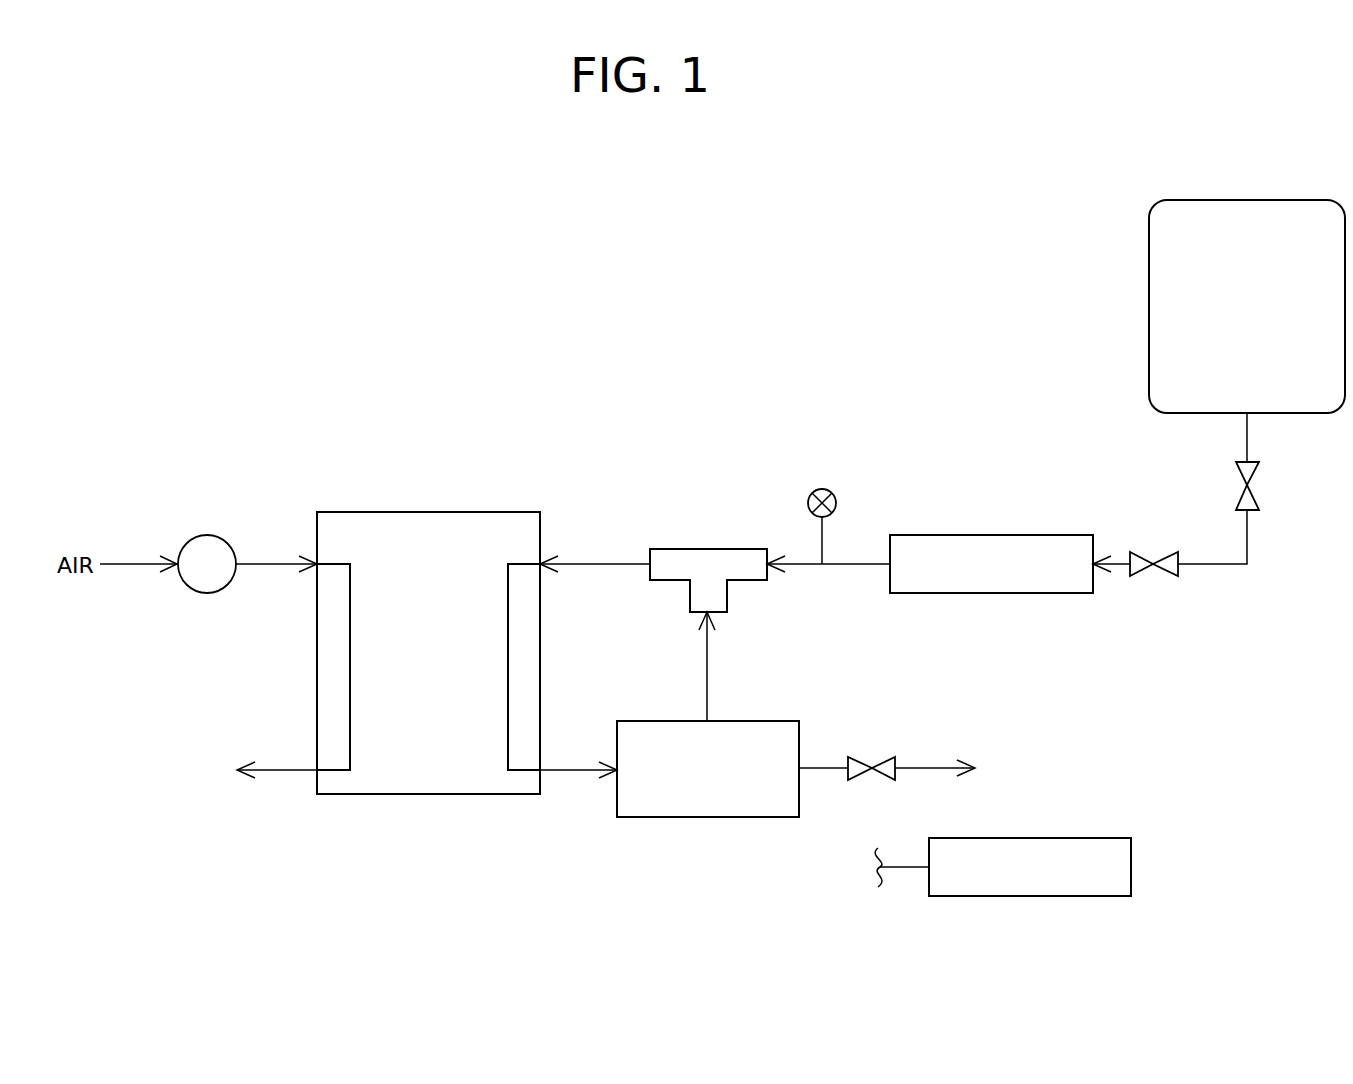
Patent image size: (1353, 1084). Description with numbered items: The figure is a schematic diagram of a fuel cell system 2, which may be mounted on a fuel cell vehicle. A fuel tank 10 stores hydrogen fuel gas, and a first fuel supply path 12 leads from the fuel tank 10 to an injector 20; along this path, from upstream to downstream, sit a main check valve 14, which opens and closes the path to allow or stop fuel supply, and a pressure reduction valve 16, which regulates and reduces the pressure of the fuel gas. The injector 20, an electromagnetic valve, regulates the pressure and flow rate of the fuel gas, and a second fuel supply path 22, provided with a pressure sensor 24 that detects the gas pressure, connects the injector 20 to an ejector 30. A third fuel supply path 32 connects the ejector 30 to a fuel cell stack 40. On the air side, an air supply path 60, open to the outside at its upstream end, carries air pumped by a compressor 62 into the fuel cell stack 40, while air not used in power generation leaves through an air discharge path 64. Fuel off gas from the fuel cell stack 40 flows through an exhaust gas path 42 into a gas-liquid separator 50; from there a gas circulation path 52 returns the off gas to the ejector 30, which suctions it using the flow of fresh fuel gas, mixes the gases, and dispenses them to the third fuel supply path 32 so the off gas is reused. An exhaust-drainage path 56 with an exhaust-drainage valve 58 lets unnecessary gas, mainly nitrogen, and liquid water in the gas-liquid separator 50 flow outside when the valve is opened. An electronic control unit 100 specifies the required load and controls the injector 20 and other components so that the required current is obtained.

The fuel cell system 2 is at (318, 396).
The fuel tank 10 is at (1148, 255).
The first fuel supply path 12 is at (1222, 566).
The main check valve 14 is at (1253, 492).
The pressure reduction valve 16 is at (1145, 578).
The injector 20 is at (1030, 535).
The second fuel supply path 22 is at (850, 565).
The pressure sensor 24 is at (822, 489).
The ejector 30 is at (727, 548).
The third fuel supply path 32 is at (582, 562).
The fuel cell stack 40 is at (435, 512).
The exhaust gas path 42 is at (572, 772).
The gas-liquid separator 50 is at (692, 818).
The gas circulation path 52 is at (708, 685).
The exhaust-drainage path 56 is at (815, 772).
The exhaust-drainage valve 58 is at (880, 760).
The air supply path 60 is at (128, 566).
The compressor 62 is at (203, 533).
The air discharge path 64 is at (285, 772).
The electronic control unit (ECU) 100 is at (1065, 838).